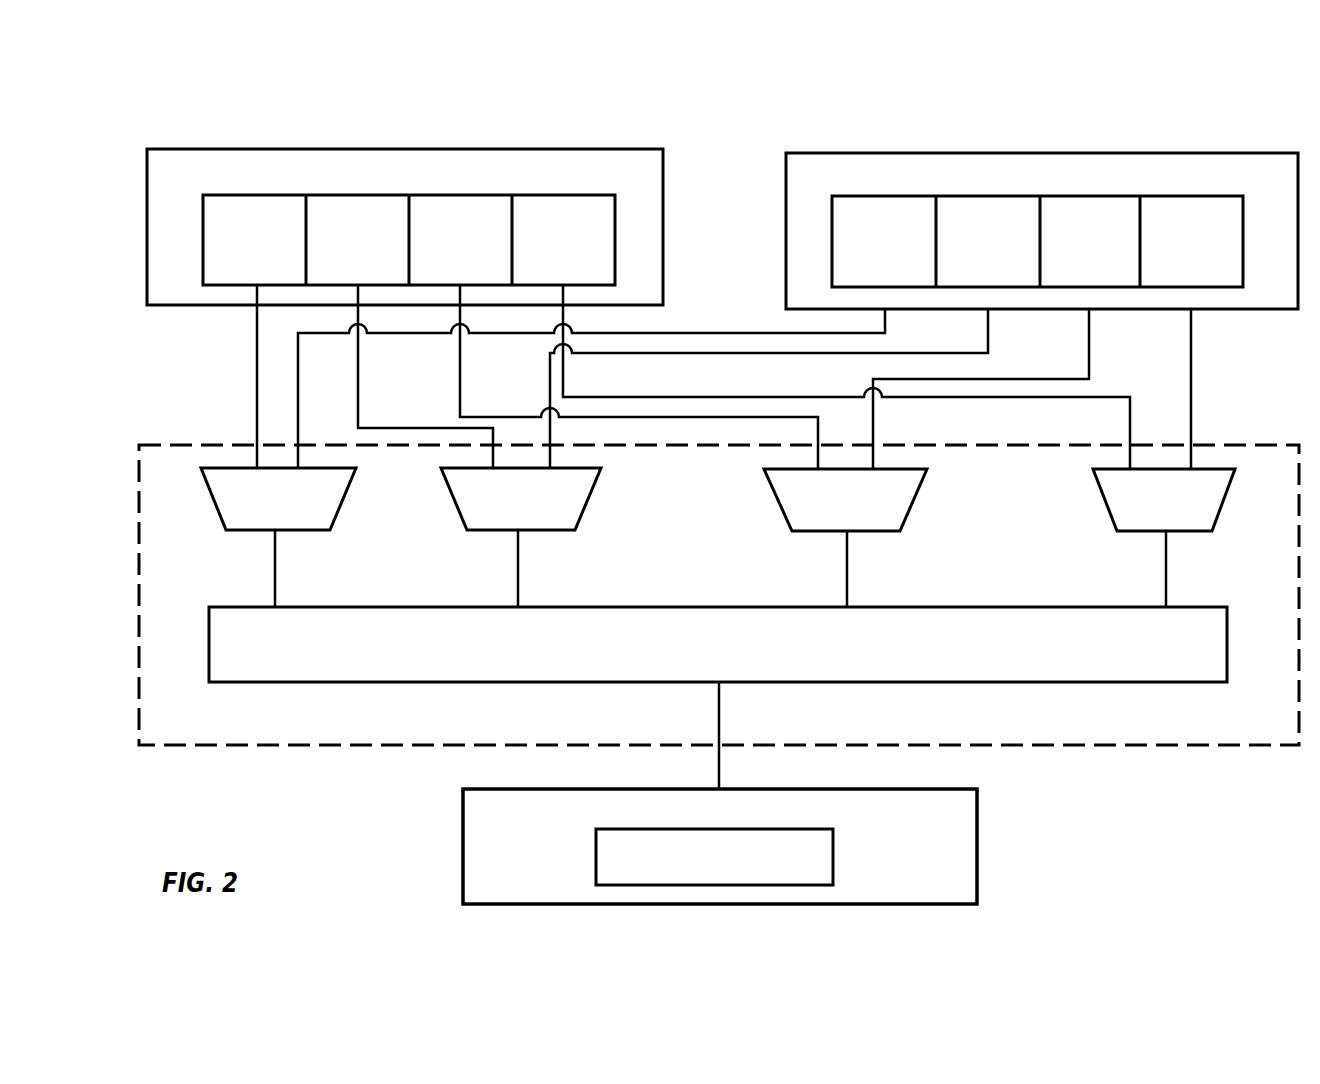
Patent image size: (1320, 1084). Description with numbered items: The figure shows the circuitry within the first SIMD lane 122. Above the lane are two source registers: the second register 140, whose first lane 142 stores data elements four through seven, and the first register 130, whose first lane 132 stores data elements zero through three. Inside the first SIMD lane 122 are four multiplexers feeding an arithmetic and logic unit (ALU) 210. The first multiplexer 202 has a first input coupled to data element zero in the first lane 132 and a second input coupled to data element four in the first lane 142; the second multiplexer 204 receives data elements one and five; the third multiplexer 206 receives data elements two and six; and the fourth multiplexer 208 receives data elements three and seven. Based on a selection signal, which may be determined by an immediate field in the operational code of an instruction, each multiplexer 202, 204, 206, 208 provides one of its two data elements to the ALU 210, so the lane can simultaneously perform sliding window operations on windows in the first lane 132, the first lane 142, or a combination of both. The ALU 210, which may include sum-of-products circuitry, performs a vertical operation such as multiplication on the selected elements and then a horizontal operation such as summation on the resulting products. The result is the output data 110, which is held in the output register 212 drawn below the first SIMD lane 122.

The second register 140 is at (136, 126).
The first lane of the second register 142 is at (412, 149).
The first register 130 is at (761, 128).
The first lane of the first register 132 is at (1053, 153).
The first SIMD lane 122 is at (363, 725).
The fourth multiplexer 208 is at (302, 530).
The third multiplexer 206 is at (547, 530).
The second multiplexer 204 is at (872, 531).
The first multiplexer 202 is at (1188, 531).
The arithmetic and logic unit 210 is at (698, 607).
The output register 212 is at (867, 789).
The output data 110 is at (833, 858).